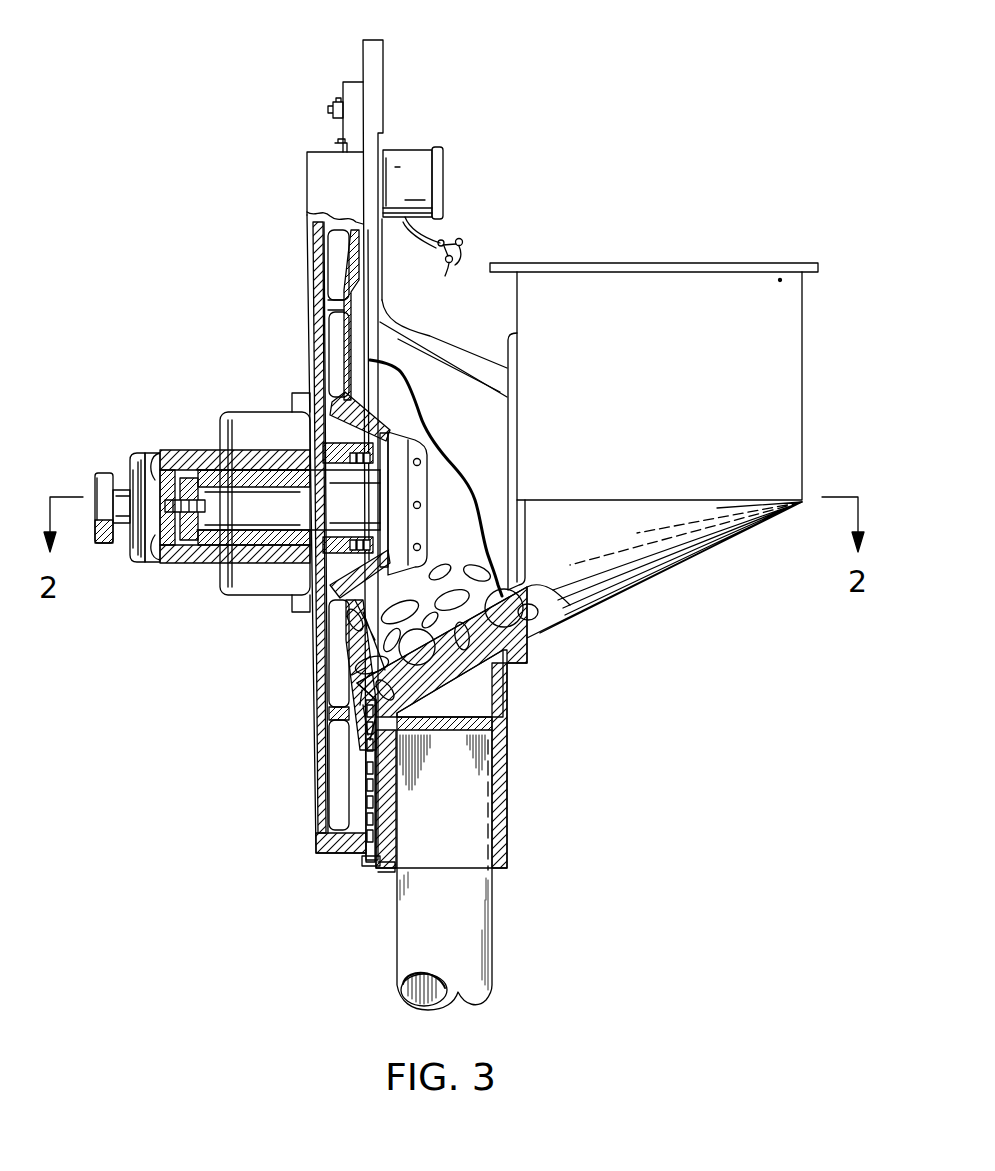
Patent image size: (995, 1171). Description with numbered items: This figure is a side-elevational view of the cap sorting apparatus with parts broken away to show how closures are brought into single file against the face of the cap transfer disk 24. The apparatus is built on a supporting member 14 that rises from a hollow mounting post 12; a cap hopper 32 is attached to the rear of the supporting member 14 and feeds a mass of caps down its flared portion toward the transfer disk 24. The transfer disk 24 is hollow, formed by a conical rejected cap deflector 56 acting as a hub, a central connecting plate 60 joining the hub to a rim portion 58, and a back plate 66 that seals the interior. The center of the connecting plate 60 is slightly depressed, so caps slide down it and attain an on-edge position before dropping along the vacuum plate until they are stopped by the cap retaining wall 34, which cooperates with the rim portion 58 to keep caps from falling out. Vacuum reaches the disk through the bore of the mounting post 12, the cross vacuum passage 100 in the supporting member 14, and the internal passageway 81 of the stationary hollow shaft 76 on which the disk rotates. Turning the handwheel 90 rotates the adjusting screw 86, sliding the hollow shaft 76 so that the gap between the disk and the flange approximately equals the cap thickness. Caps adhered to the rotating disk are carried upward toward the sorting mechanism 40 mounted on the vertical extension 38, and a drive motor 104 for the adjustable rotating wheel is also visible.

The hollow mounting post 12 is at (492, 945).
The supporting member 14 is at (432, 352).
The cap transfer disk 24 is at (297, 708).
The cap hopper 32 is at (803, 398).
The cap retaining wall 34 is at (370, 866).
The vertical extension 38 is at (386, 292).
The sorting mechanism 40 is at (358, 83).
The rejected cap deflector 56 is at (410, 440).
The rim portion 58 is at (322, 857).
The central connecting plate 60 is at (441, 550).
The back plate 66 is at (317, 783).
The hollow shaft 76 is at (190, 560).
The internal passageway 81 is at (296, 518).
The adjusting screw 86 is at (165, 560).
The handwheel 90 is at (98, 472).
The cross vacuum passage 100 is at (472, 714).
The drive motor 104 is at (413, 156).